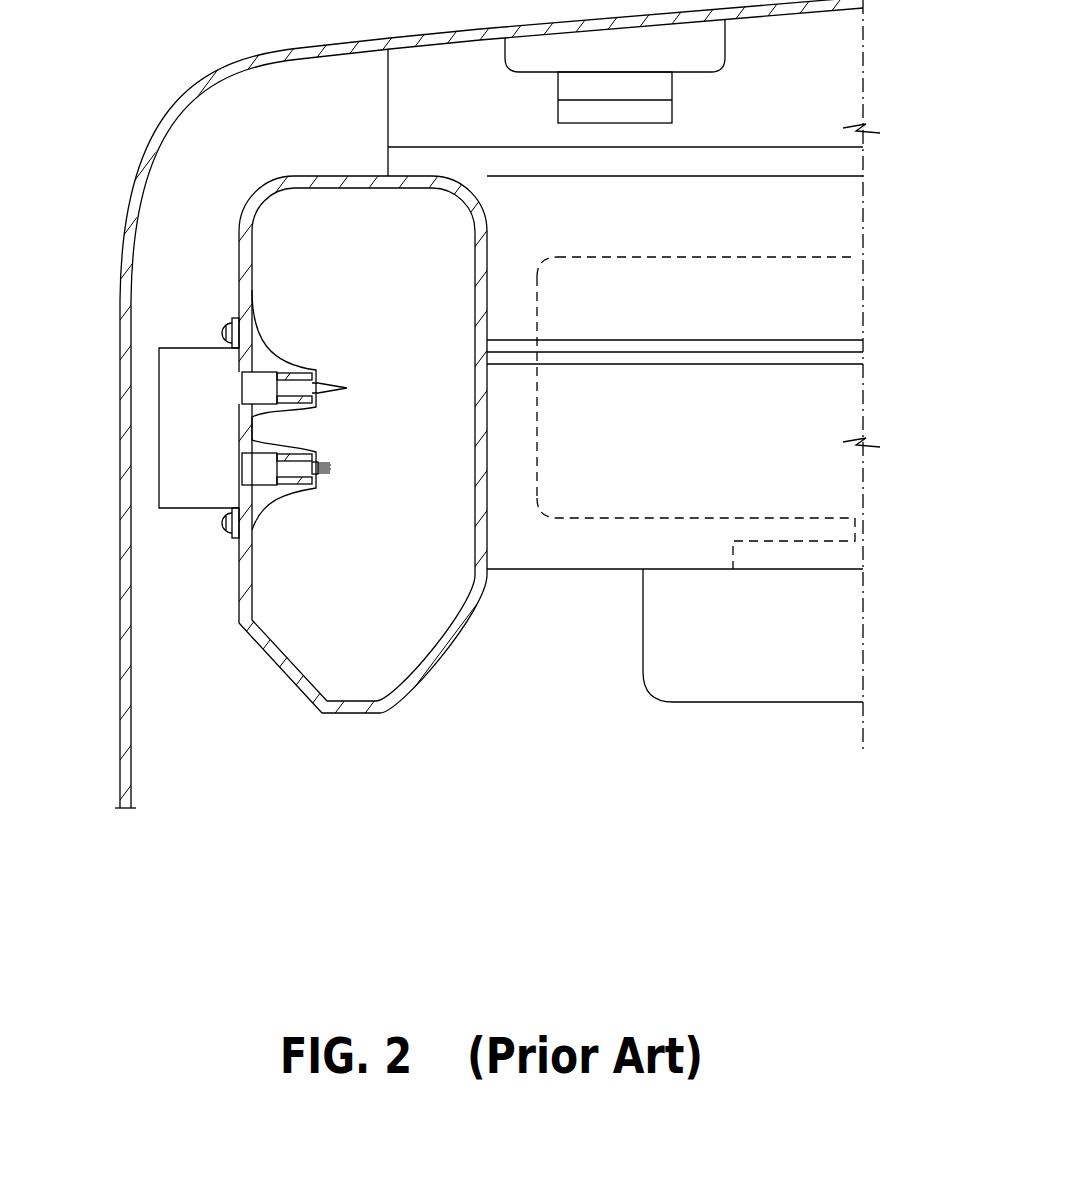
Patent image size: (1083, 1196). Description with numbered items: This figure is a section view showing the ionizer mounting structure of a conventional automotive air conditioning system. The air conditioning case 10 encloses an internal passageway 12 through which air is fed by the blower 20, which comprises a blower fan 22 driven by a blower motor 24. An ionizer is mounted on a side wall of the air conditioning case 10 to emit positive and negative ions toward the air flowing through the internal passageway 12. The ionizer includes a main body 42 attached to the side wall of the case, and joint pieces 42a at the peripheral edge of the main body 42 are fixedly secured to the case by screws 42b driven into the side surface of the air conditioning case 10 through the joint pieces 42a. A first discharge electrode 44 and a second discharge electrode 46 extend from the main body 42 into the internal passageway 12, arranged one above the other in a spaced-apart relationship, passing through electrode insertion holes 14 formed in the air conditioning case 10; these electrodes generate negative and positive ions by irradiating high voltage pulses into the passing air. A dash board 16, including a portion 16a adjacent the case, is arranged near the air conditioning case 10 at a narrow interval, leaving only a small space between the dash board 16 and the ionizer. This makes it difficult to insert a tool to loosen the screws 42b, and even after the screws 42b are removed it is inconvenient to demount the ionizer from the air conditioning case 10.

The air conditioning case 10 is at (269, 527).
The internal passageway 12 is at (361, 472).
The electrode insertion holes 14 is at (237, 419).
The dash board 16 is at (172, 108).
The mounting portion of panel 16a is at (252, 587).
The blower 20 is at (697, 588).
The blower fan 22 is at (617, 518).
The blower motor 24 is at (780, 541).
The main body 42 is at (167, 358).
The joint pieces 42a is at (233, 320).
The screws 42b is at (225, 333).
The first discharge electrode 44 is at (325, 380).
The second discharge electrode 46 is at (320, 476).